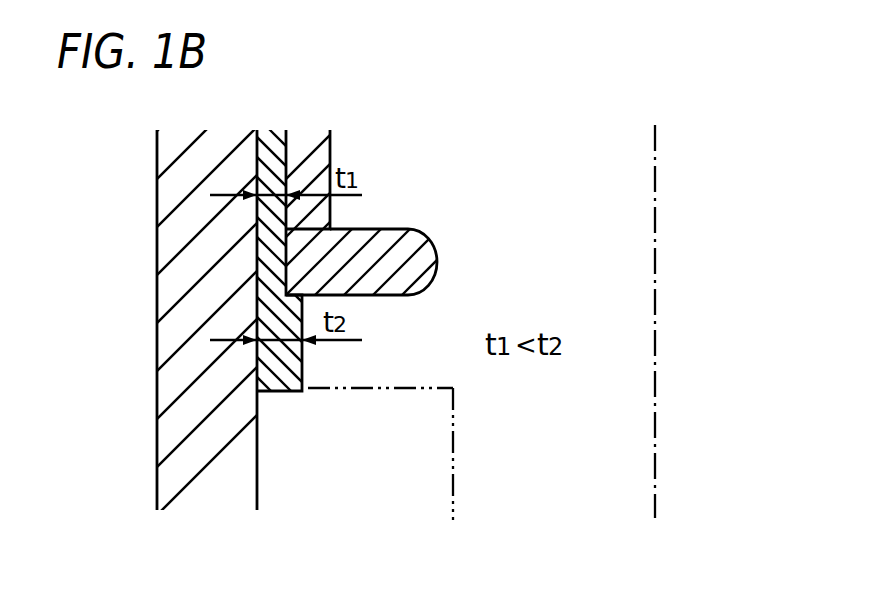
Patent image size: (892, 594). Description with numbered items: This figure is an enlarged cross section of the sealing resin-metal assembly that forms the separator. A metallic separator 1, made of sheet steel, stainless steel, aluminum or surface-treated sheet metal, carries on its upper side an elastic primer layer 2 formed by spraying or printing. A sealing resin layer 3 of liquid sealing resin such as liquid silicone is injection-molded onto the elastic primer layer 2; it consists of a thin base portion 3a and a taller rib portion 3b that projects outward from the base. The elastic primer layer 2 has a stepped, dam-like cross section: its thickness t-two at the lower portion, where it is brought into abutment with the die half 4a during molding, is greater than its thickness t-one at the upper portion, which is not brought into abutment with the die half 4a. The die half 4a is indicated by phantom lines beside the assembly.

The metallic separator 1 is at (178, 332).
The elastic primer layer 2 is at (274, 393).
The sealing resin layer 3 is at (348, 297).
The base portion 3a is at (318, 150).
The rib portion 3b is at (535, 143).
The die half 4a is at (628, 433).